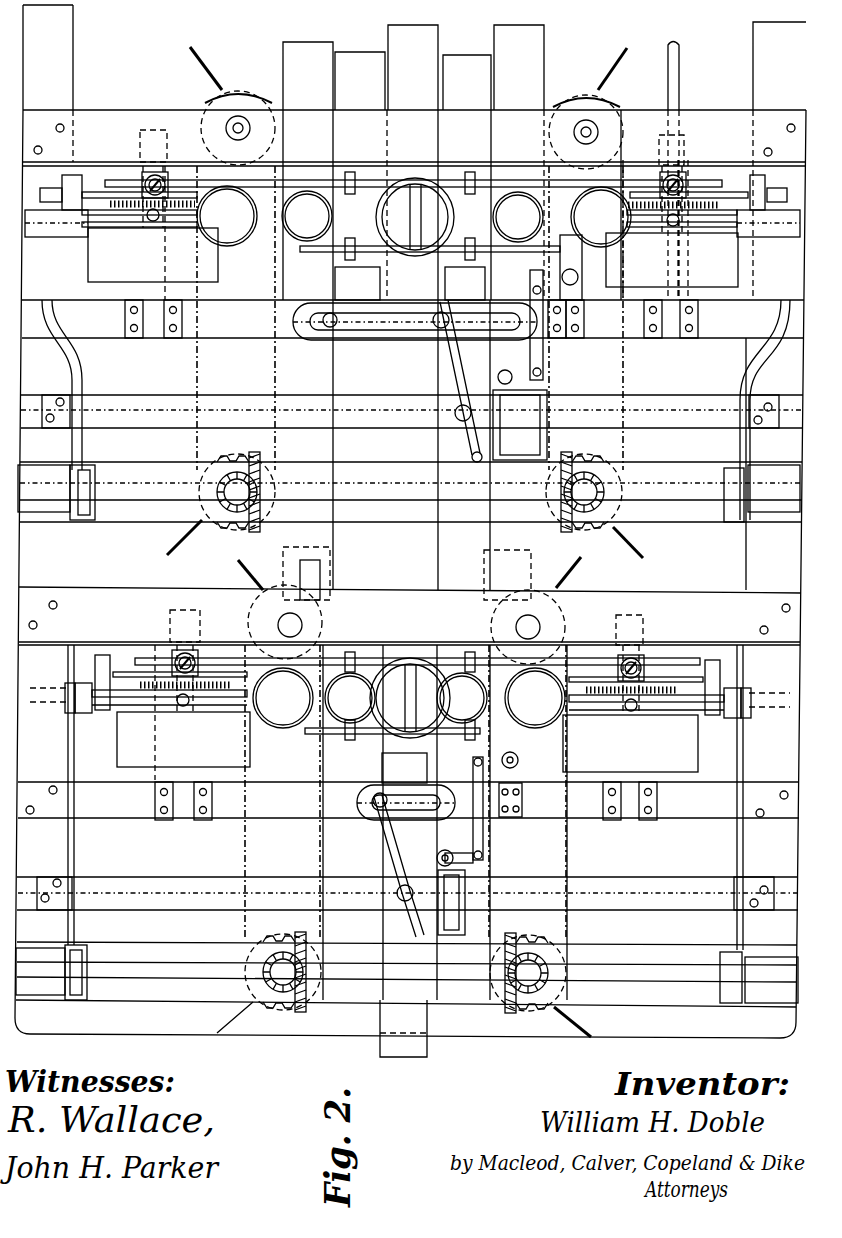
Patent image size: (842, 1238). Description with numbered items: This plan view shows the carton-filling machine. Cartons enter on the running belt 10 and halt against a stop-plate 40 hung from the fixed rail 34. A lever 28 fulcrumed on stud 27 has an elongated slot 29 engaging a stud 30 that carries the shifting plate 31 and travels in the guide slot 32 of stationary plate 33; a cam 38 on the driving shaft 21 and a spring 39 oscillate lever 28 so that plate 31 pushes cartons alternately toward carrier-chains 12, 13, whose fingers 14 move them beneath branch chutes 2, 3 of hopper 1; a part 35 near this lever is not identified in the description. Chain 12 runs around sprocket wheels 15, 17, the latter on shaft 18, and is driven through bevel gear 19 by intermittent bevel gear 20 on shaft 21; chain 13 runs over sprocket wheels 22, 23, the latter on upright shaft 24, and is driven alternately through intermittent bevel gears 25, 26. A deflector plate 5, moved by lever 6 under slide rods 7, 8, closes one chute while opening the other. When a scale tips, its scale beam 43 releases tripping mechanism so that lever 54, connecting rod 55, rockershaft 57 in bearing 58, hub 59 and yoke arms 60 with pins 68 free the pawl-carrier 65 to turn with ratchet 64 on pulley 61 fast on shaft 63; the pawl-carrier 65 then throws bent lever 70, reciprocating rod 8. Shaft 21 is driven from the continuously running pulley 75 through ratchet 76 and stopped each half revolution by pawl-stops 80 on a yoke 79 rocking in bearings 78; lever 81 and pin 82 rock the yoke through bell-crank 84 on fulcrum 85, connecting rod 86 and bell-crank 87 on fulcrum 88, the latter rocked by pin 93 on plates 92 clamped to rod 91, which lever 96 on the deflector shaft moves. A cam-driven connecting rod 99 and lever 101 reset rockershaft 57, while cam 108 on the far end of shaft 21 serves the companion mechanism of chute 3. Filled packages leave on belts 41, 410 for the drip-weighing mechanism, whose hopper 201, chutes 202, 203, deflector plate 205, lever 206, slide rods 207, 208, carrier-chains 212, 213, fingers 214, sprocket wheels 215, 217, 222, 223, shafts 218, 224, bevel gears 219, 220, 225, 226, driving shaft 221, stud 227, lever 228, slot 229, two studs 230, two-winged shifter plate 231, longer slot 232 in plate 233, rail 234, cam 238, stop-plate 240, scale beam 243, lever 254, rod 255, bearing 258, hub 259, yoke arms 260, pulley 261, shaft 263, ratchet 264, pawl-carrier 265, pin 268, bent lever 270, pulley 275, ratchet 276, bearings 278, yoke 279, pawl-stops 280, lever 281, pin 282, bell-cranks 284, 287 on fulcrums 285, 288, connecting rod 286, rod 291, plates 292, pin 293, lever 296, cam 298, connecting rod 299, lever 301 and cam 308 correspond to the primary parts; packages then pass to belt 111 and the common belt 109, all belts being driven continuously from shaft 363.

The hopper 1 is at (410, 671).
The branch chute 2 is at (462, 666).
The branch chute 3 is at (314, 698).
The deflector plate 5 is at (368, 615).
The lever 6 is at (428, 610).
The slide rod 7 is at (417, 640).
The slide rod 8 is at (573, 625).
The belt 10 is at (360, 1052).
The carrier-chain 12 is at (520, 842).
The carrier-chain 13 is at (270, 847).
The carton-moving fingers 14 is at (410, 533).
The sprocket wheel 15 is at (545, 917).
The sprocket wheel 17 is at (585, 607).
The shaft 18 is at (528, 627).
The bevel gear 19 is at (528, 994).
The intermittent bevel gear 20 is at (500, 1052).
The driving shaft 21 is at (407, 1004).
The sprocket wheel 22 is at (283, 996).
The sprocket 23 is at (271, 622).
The upright shaft 24 is at (258, 604).
The intermittent bevel gear 25 is at (278, 1052).
The intermittent bevel gear 26 is at (300, 1047).
The stud 27 is at (394, 910).
The lever 28 is at (390, 866).
The elongated slot 29 is at (405, 832).
The stud 30 is at (359, 800).
The shifting plate 31 is at (345, 767).
The guide slot 32 is at (406, 786).
The stationary plate 33 is at (450, 757).
The fixed rail 34 is at (275, 757).
The pin 35 is at (360, 832).
The cam 38 is at (360, 1012).
The spring 39 is at (415, 927).
The stop-plate 40 is at (392, 740).
The belt 41 is at (442, 289).
The scale beam 43 is at (535, 698).
The lever 54 is at (402, 678).
The connecting rod 55 is at (397, 614).
The rockershaft 57 is at (408, 713).
The bearing 58 is at (404, 659).
The hub 59 is at (402, 742).
The yoke arms 60 is at (404, 726).
The pulley 61 is at (392, 801).
The shaft 63 is at (396, 842).
The ratchet 64 is at (403, 710).
The pawl-carrier 65 is at (406, 642).
The pin 68 is at (407, 715).
The bent lever 70 is at (395, 641).
The pulley 75 is at (470, 1052).
The ratchet 76 is at (430, 1012).
The bearings 78 is at (453, 902).
The yoke 79 is at (440, 947).
The pawl-stops 80 is at (458, 1002).
The lever 81 is at (440, 917).
The pin 82 is at (410, 877).
The bell-crank 84 is at (415, 862).
The fulcrum 85 is at (439, 842).
The connecting rod 86 is at (450, 827).
The bell-crank 87 is at (464, 810).
The fulcrum 88 is at (520, 758).
The rod 91 is at (460, 700).
The plates 92 is at (526, 777).
The pin 93 is at (614, 842).
The lever 96 is at (404, 765).
The connecting rod 99 is at (392, 797).
The lever 101 is at (399, 697).
The cam 108 is at (405, 949).
The belt 109 is at (369, 74).
The belt 111 is at (271, 79).
The hopper 201 is at (396, 129).
The drip-chute 202 is at (496, 129).
The chute 203 is at (274, 216).
The deflector plate 205 is at (430, 262).
The lever 206 is at (464, 209).
The slide rod 207 is at (413, 160).
The slide rod 208 is at (516, 129).
The carrier-chain 212 is at (646, 369).
The carrier-chain 213 is at (200, 340).
The fingers 214 is at (389, 306).
The sprocket wheel 215 is at (584, 509).
The sprocket wheel 217 is at (586, 108).
The shaft 218 is at (584, 81).
The bevel gear 219 is at (599, 359).
The intermittent bevel gear 220 is at (586, 359).
The driving shaft 221 is at (409, 513).
The sprocket wheel 222 is at (230, 506).
The sprocket 223 is at (224, 90).
The upright shaft 224 is at (238, 128).
The intermittent bevel gear 225 is at (213, 554).
The intermittent bevel gear 226 is at (253, 554).
The stud 227 is at (458, 433).
The lever 228 is at (448, 377).
The elongated slot 229 is at (469, 354).
The studs 230 is at (394, 281).
The shifter plate 231 is at (415, 344).
The slot 232 is at (511, 279).
The plate 233 is at (389, 279).
The fixed rail 234 is at (241, 274).
The cam 238 is at (446, 539).
The stop-plate 240 is at (402, 217).
The scale beam 243 is at (206, 254).
The lever 254 is at (410, 187).
The connecting rod 255 is at (410, 139).
The bearing 258 is at (413, 168).
The hub 259 is at (408, 257).
The yoke arms 260 is at (409, 238).
The pulley 261 is at (400, 317).
The shaft 263 is at (411, 357).
The ratchet 264 is at (414, 235).
The pawl-carrier 265 is at (415, 162).
The pin 268 is at (410, 242).
The bent lever 270 is at (405, 162).
The pulley 275 is at (471, 544).
The ratchet 276 is at (496, 534).
The bearings 278 is at (536, 439).
The yoke 279 is at (520, 425).
The pawl-stops 280 is at (521, 534).
The lever 281 is at (524, 325).
The pin 282 is at (474, 374).
The bell-crank 284 is at (562, 322).
The fulcrum 285 is at (492, 363).
The connecting rod 286 is at (571, 300).
The bell-crank 287 is at (555, 305).
The fulcrum 288 is at (581, 279).
The rod 291 is at (518, 217).
The plates 292 is at (596, 264).
The pin 293 is at (588, 214).
The lever 296 is at (461, 279).
The cam 298 is at (410, 478).
The connecting rod 299 is at (415, 410).
The lever 301 is at (411, 240).
The cam 308 is at (91, 510).
The shaft 363 is at (676, 72).
The belt 410 is at (439, 286).